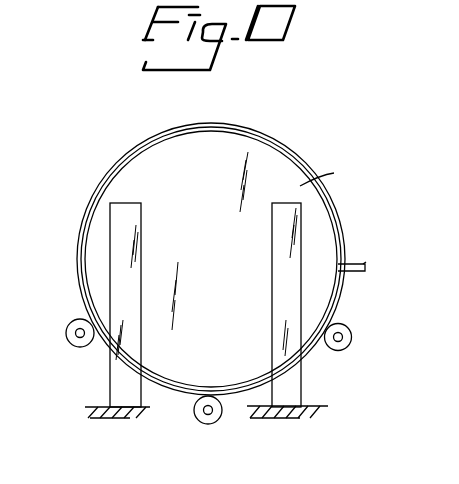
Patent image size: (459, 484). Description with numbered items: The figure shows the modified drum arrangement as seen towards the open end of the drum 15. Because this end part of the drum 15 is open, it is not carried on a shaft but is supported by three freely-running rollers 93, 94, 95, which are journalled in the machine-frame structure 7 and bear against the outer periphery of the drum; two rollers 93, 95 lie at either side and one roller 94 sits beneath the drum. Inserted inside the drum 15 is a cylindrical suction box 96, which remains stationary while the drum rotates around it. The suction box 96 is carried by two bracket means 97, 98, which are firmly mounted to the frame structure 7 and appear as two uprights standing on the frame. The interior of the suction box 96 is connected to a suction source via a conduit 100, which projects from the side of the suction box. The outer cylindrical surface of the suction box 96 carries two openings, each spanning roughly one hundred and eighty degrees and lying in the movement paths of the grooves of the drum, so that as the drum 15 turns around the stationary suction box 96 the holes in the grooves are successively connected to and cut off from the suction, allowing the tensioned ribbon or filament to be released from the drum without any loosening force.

The machine-frame structure 7 is at (320, 418).
The drum 15 is at (312, 171).
The roller 93 is at (72, 325).
The roller 94 is at (198, 417).
The roller 95 is at (348, 333).
The suction box 96 is at (329, 175).
The bracket means 97 is at (113, 222).
The bracket means 98 is at (297, 243).
The conduit 100 is at (354, 260).